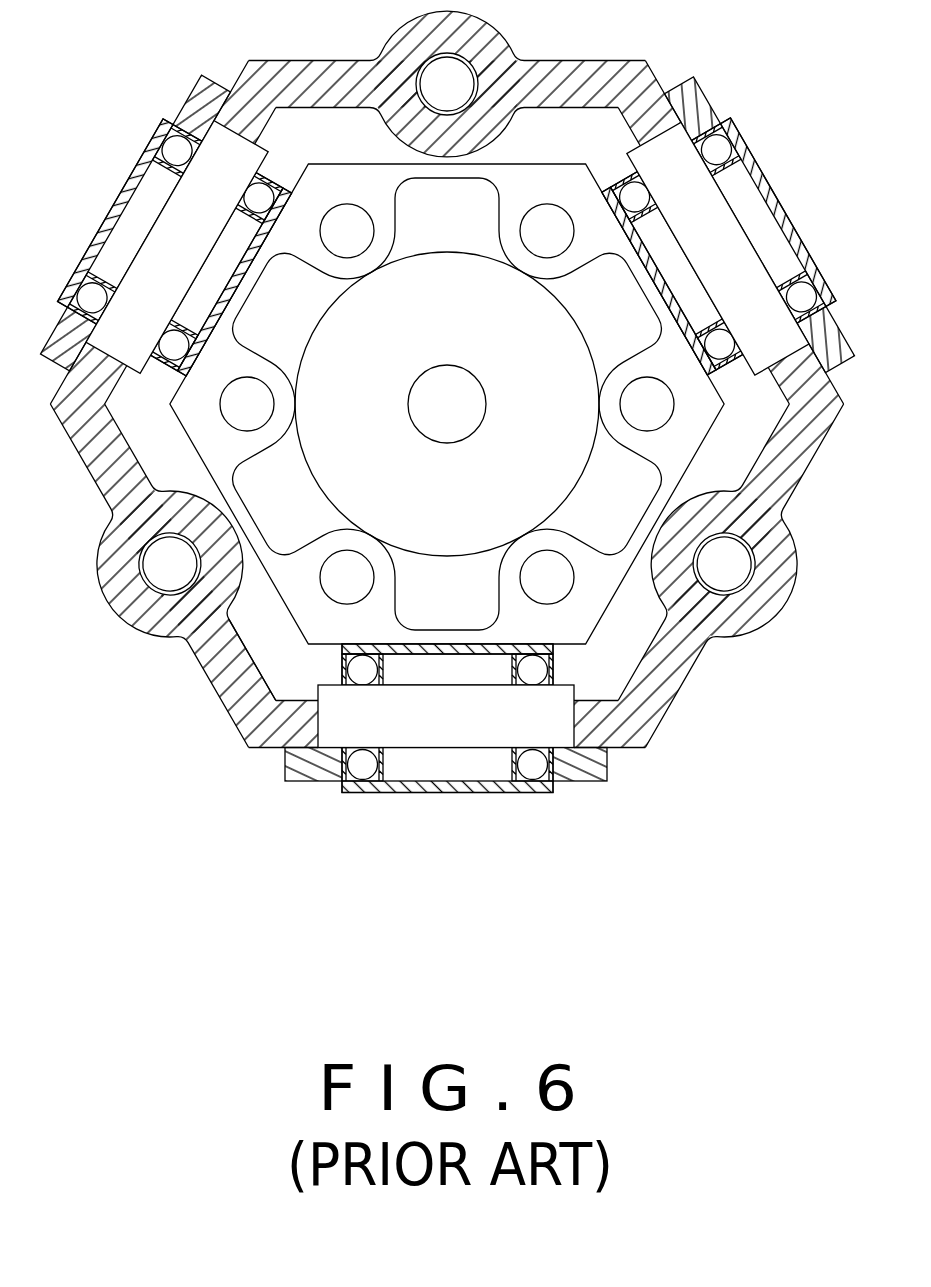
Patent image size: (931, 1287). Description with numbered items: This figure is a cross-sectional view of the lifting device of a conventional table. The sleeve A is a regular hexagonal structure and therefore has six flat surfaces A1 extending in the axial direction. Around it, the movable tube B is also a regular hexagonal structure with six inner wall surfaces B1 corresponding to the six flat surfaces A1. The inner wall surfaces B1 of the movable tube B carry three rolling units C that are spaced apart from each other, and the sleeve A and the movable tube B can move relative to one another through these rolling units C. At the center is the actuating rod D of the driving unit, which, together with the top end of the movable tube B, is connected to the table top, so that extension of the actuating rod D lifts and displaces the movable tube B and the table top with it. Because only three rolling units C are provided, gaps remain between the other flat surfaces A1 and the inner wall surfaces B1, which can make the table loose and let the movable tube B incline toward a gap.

The sleeve A is at (597, 588).
The flat surfaces A1 is at (458, 643).
The movable tube B is at (235, 678).
The inner wall surfaces B1 is at (250, 655).
The rolling units C is at (447, 793).
The actuating rod D is at (433, 404).